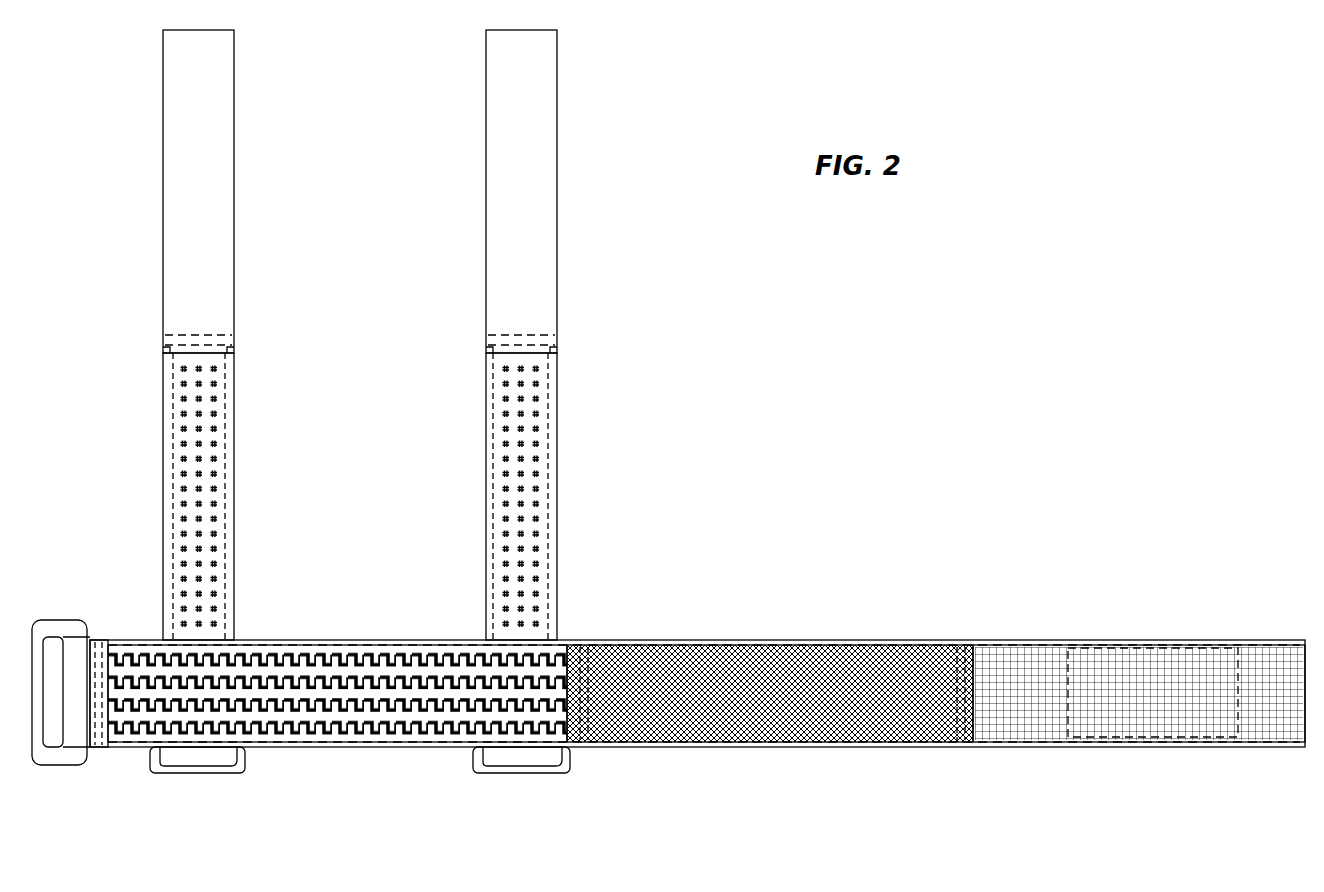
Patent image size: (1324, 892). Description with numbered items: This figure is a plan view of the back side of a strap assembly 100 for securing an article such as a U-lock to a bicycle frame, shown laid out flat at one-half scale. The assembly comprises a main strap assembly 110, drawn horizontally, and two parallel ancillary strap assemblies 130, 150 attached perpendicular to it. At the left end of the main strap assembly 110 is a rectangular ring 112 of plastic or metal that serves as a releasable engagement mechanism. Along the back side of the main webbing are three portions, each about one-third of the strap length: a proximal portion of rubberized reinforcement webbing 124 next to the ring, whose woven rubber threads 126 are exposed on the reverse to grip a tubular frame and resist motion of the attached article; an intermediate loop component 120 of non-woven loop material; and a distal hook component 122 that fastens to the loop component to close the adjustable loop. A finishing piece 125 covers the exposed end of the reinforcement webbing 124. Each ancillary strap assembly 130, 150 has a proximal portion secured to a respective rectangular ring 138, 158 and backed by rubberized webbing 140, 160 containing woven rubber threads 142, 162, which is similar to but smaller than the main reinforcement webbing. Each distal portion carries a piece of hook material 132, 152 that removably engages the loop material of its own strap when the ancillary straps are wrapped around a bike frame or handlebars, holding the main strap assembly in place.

The strap assembly 100 is at (805, 333).
The main strap assembly 110 is at (658, 692).
The rectangular ring 112 is at (40, 765).
The loop component 120 is at (790, 715).
The hook component 122 is at (1268, 720).
The rubberized reinforcement webbing 124 is at (393, 650).
The finishing piece 125 is at (100, 640).
The rubber threads 126 is at (415, 670).
The ancillary strap assembly 130 is at (483, 335).
The hook material piece 132 is at (508, 133).
The rectangular ring 138 is at (525, 775).
The rubberized webbing 140 is at (492, 418).
The rubber threads 142 is at (520, 490).
The ancillary strap assembly 150 is at (159, 335).
The hook material piece 152 is at (183, 111).
The rectangular ring 158 is at (200, 775).
The rubberized webbing 160 is at (170, 415).
The rubber threads 162 is at (200, 490).